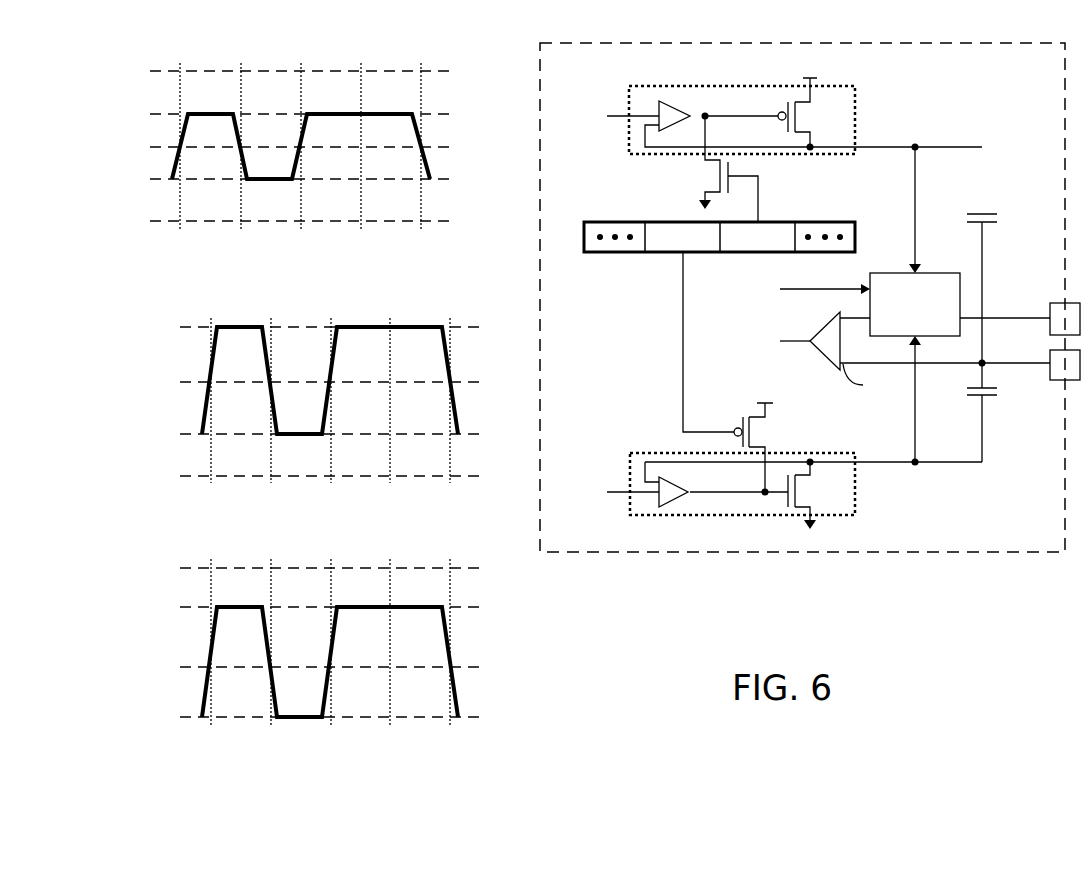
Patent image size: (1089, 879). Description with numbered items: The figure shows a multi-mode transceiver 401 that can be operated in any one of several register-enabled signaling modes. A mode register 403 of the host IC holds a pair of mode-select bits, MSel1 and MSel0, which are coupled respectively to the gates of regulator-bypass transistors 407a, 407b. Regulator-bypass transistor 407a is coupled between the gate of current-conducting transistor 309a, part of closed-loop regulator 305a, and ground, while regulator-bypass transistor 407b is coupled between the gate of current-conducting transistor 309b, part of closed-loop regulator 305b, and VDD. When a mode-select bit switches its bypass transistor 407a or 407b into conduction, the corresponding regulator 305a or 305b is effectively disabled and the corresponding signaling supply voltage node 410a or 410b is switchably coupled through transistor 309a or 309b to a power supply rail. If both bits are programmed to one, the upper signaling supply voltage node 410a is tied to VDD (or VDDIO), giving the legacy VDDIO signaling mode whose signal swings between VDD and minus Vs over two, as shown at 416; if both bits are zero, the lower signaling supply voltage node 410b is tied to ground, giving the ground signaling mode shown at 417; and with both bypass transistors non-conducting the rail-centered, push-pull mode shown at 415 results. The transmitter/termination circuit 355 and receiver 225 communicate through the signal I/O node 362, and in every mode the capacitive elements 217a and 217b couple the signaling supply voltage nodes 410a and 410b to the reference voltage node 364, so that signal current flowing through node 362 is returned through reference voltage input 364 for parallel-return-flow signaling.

The multi-mode transceiver 401 is at (1008, 81).
The closed-loop regulator 305a is at (712, 85).
The closed-loop regulator 305b is at (715, 517).
The current-conducting transistor 309a is at (834, 103).
The current-conducting transistor 309b is at (766, 494).
The regulator-bypass transistor 407a is at (713, 169).
The regulator-bypass transistor 407b is at (740, 374).
The mode register 403 is at (622, 221).
The upper signaling supply voltage node 410a is at (960, 146).
The lower signaling supply voltage node 410b is at (958, 462).
The capacitive element 217a is at (988, 210).
The capacitive element 217b is at (988, 397).
The transmitter/termination circuit 355 is at (905, 325).
The receiver 225 is at (832, 357).
The signal I/O node 362 is at (990, 318).
The reference voltage node 364 is at (990, 363).
The rail-centered signaling mode waveform 415 is at (584, 237).
The VDDIO signaling mode waveform 416 is at (584, 237).
The ground signaling mode waveform 417 is at (584, 237).